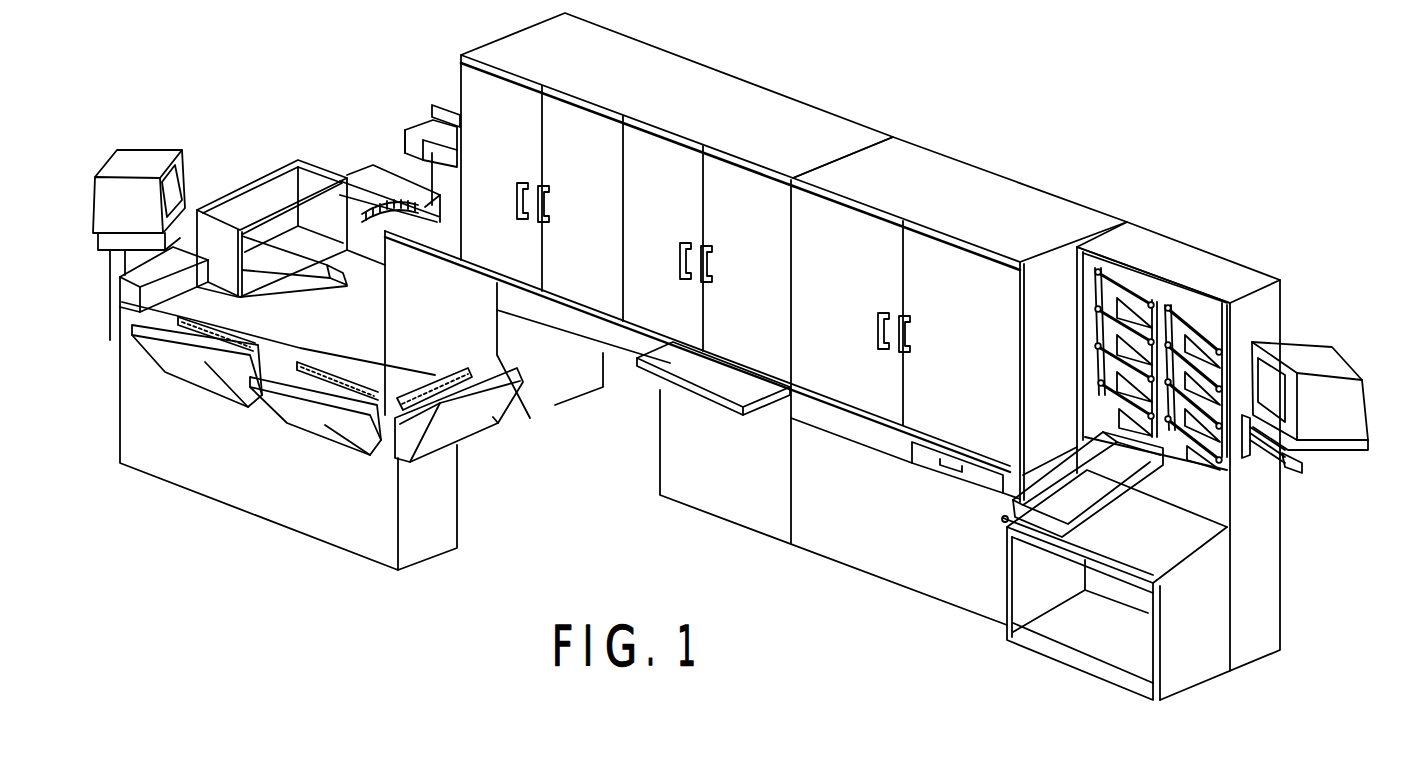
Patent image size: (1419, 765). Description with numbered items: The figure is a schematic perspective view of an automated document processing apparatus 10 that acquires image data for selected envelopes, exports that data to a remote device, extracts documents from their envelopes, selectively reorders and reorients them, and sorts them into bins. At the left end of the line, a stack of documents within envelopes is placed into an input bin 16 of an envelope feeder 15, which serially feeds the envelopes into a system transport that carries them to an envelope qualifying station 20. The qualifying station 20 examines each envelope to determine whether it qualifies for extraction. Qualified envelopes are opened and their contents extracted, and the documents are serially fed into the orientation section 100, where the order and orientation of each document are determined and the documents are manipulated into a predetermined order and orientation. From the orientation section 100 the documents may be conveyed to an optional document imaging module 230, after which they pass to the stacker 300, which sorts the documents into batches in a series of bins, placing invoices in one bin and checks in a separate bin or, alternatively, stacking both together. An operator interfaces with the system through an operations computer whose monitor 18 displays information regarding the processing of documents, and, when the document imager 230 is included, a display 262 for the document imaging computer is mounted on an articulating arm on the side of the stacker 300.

The apparatus 10 is at (928, 101).
The envelope feeder 15 is at (127, 297).
The input bin 16 is at (349, 371).
The monitor 18 is at (143, 160).
The envelope qualifying station 20 is at (253, 203).
The orientation section 100 is at (757, 104).
The document imaging module 230 is at (990, 183).
The display 262 is at (1310, 358).
The stacker 300 is at (1185, 260).